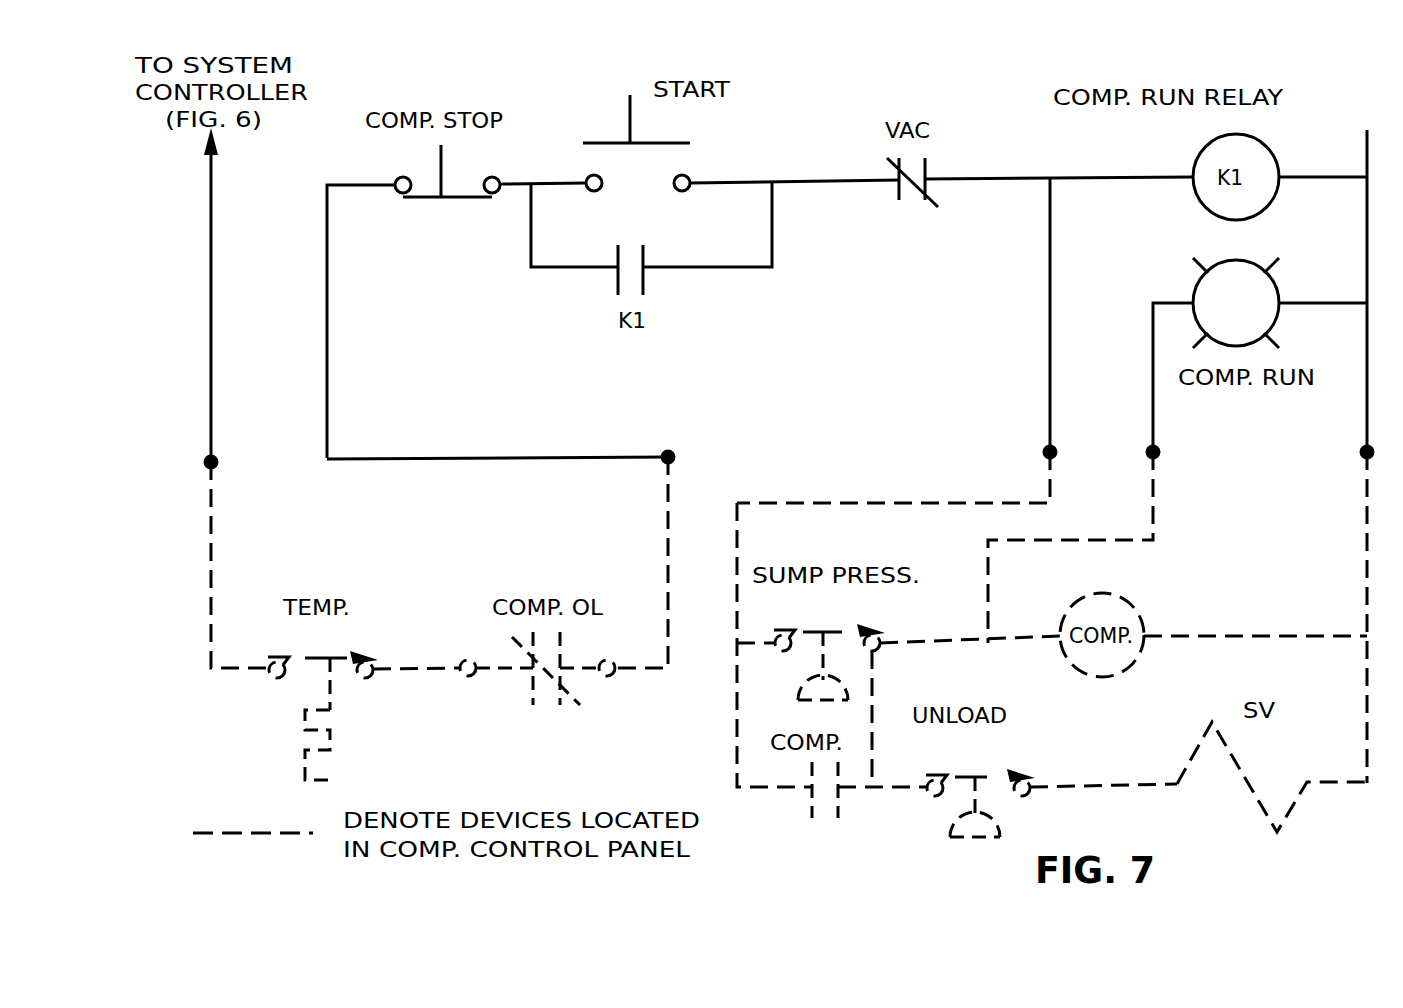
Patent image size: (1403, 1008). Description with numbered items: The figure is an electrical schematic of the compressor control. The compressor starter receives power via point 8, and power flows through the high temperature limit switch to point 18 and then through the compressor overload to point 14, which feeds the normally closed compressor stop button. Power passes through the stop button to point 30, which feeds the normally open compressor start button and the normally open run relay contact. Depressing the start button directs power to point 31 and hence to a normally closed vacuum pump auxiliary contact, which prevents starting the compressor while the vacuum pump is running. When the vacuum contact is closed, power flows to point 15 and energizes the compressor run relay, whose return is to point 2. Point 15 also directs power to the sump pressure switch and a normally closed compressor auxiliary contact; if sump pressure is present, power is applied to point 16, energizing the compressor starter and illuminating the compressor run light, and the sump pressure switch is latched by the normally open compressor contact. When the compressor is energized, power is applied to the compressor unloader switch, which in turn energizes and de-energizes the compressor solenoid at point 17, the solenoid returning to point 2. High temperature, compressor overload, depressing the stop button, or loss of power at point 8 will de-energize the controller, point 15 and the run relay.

The point 2 is at (1352, 440).
The point 8 is at (217, 398).
The point 14 is at (522, 553).
The point 15 is at (896, 341).
The point 16 is at (1097, 473).
The point 17 is at (1103, 764).
The point 18 is at (416, 687).
The point 30 is at (545, 233).
The point 31 is at (732, 232).